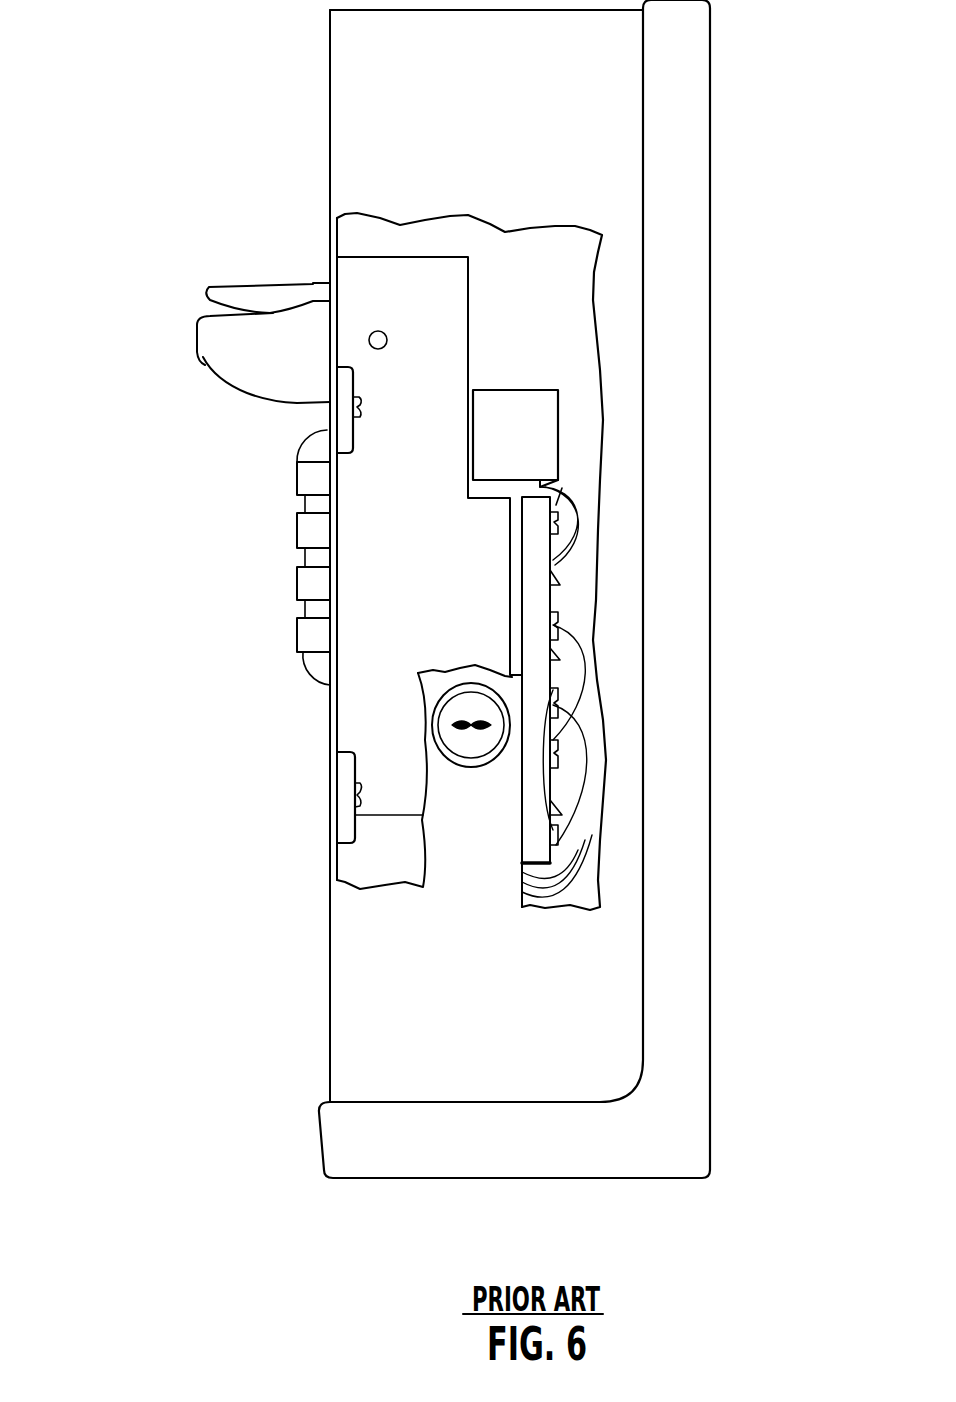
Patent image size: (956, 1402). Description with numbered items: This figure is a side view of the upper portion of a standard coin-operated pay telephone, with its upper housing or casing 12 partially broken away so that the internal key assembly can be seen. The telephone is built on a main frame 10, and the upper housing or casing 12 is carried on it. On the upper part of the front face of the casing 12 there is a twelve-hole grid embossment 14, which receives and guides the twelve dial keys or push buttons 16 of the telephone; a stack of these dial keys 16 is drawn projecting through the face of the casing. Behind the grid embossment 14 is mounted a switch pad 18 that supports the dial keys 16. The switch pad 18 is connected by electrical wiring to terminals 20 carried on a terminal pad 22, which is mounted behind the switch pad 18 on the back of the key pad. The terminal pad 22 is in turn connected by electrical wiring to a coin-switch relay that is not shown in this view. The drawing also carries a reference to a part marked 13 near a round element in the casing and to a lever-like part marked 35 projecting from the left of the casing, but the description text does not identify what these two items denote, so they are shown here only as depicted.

The main frame 10 is at (683, 320).
The upper housing or casing 12 is at (362, 945).
The key cylinder 13 is at (447, 737).
The twelve-hole grid embossment 14 is at (320, 450).
The dial keys or push buttons 16 is at (297, 495).
The switch pad 18 is at (370, 670).
The terminals 20 is at (557, 623).
The terminal pad 22 is at (540, 596).
The lever handle 35 is at (218, 363).